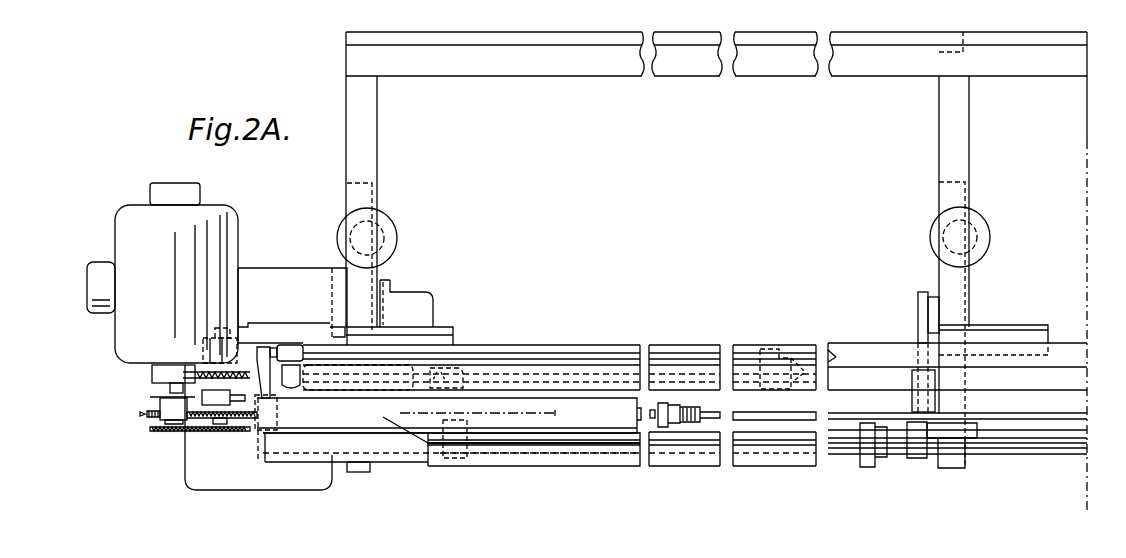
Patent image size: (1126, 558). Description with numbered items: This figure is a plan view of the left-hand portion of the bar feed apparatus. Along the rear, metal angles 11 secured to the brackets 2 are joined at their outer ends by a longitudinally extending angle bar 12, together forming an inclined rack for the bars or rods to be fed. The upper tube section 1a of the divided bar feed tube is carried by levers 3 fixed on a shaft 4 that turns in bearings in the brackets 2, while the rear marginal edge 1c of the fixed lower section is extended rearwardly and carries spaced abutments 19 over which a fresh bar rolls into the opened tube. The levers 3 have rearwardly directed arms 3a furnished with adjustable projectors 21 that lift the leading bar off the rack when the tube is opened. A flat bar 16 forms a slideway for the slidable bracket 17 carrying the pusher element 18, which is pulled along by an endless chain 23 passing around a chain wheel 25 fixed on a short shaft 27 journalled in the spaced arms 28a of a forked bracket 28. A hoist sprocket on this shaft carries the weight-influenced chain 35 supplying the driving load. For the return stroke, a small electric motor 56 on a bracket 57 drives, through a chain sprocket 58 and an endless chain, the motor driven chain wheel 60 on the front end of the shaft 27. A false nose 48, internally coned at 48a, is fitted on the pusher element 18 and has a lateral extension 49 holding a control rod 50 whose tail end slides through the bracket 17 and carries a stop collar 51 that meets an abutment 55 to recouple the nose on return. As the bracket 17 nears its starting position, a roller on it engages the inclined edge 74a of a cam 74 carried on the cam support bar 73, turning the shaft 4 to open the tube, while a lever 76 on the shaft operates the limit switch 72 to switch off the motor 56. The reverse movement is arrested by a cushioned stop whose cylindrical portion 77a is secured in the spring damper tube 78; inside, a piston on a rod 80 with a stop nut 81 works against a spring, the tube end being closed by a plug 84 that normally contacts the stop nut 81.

The angle bar 12 is at (518, 34).
The metal angles 11 is at (351, 97).
The bracket 57 is at (272, 268).
The electric motor 56 is at (162, 273).
The weight-influenced chain 35 is at (210, 360).
The spaced arms 28a is at (218, 326).
The chain wheel 25 is at (146, 414).
The forked bracket 28 is at (200, 413).
The chain sprocket 58 is at (152, 431).
The short shaft 27 is at (222, 431).
The motor driven chain wheel 60 is at (259, 421).
The cylindrical portion 77a is at (271, 406).
The abutment 55 is at (260, 345).
The stop collar 51 is at (274, 345).
The slidable bracket 17 is at (295, 345).
The pusher element 18 is at (406, 303).
The limit switch 72 is at (443, 367).
The abutments 19 is at (455, 333).
The control rod 50 is at (572, 352).
The lever 76 is at (465, 388).
The rear marginal edge 1c is at (871, 353).
The upper tube section 1a is at (880, 372).
The spring damper tube 78 is at (577, 410).
The plug 84 is at (637, 425).
The endless chain 23 is at (520, 416).
The cam 74 is at (421, 462).
The inclined edge 74a is at (436, 440).
The cam support bar 73 is at (706, 462).
The brackets 2 is at (358, 472).
The bar 16 is at (1052, 423).
The shaft 4 is at (1003, 446).
The stop nut 81 is at (658, 406).
The rod 80 is at (672, 410).
The lateral extension 49 is at (770, 348).
The false nose 48 is at (792, 358).
The internally coned end 48a is at (820, 357).
The projectors 21 is at (932, 290).
The rearwardly directed arms 3a is at (924, 317).
The levers 3 is at (913, 400).